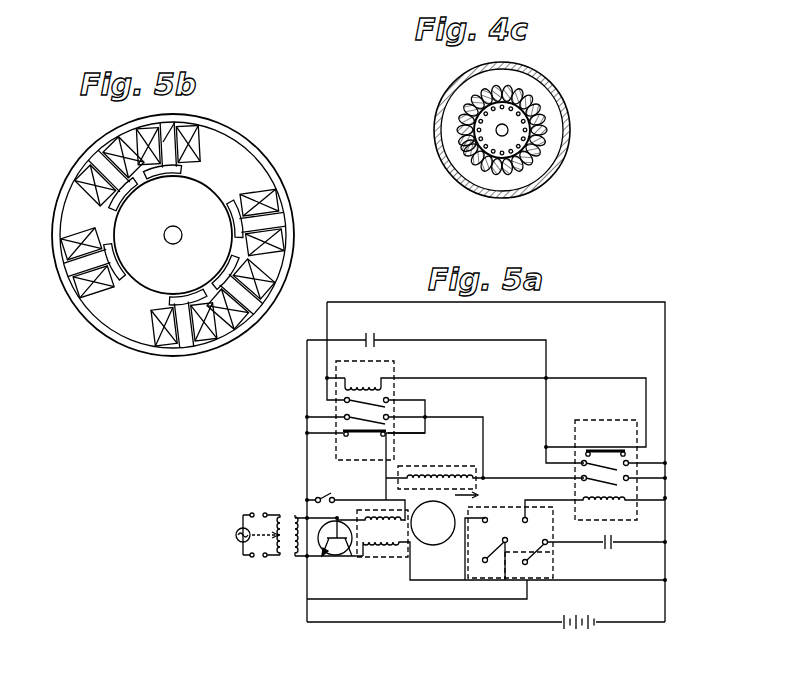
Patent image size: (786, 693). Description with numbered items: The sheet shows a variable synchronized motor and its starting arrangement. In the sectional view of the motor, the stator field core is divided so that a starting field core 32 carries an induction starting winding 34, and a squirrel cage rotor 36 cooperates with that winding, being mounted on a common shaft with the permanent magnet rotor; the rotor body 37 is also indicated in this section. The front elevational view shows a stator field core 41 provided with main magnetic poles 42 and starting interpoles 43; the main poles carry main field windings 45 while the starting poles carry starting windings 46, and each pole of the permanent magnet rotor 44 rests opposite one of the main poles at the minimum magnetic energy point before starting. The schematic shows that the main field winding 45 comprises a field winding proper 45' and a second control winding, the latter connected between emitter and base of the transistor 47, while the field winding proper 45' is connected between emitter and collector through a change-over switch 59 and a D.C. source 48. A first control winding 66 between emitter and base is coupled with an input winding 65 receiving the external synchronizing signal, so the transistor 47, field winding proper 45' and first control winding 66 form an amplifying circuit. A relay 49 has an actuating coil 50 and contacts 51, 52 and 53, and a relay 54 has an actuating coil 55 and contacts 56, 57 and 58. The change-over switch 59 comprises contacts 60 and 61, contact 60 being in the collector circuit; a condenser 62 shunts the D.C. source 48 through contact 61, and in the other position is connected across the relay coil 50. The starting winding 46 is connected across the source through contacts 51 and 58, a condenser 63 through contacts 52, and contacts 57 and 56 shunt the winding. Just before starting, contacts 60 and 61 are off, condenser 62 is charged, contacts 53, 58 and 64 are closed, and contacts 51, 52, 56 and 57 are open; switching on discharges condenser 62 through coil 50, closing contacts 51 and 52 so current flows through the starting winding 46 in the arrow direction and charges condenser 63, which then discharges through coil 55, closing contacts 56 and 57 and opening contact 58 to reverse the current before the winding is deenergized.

In FIG. 4C, the starting field core 32 is at (528, 82).
In FIG. 4C, the induction starting winding 34 is at (537, 108).
In FIG. 4C, the squirrel cage rotor 36 is at (470, 150).
In FIG. 4C, the rotor 37 is at (478, 138).
In FIG. 5B, the stator field core 41 is at (262, 160).
In FIG. 5B, the main magnetic poles 42 is at (175, 122).
In FIG. 5B, the starting interpoles 43 is at (255, 298).
In FIG. 5B, the permanent magnet rotor 44 is at (152, 283).
In FIG. 5A, the permanent magnet rotor 44 is at (446, 538).
In FIG. 5B, the main field winding 45 is at (80, 268).
In FIG. 5A, the main field winding 45 is at (393, 546).
In FIG. 5A, the field winding proper 45' is at (510, 555).
In FIG. 5B, the starting winding 46 is at (232, 307).
In FIG. 5A, the starting winding 46 is at (428, 470).
In FIG. 5A, the transistor 47 is at (340, 557).
In FIG. 5A, the D.C. source 48 is at (562, 628).
In FIG. 5A, the relay 49 is at (580, 420).
In FIG. 5A, the actuating coil 50 is at (618, 502).
In FIG. 5A, the relay contact 51 is at (620, 486).
In FIG. 5A, the relay contact 52 is at (618, 467).
In FIG. 5A, the relay contact 53 is at (606, 451).
In FIG. 5A, the relay 54 is at (395, 370).
In FIG. 5A, the actuating coil 55 is at (390, 385).
In FIG. 5A, the relay contact 56 is at (317, 396).
In FIG. 5A, the relay contact 57 is at (303, 414).
In FIG. 5A, the relay contact 58 is at (363, 434).
In FIG. 5A, the change-over switch 59 is at (556, 568).
In FIG. 5A, the change-over contact 60 is at (490, 546).
In FIG. 5A, the change-over contact 61 is at (548, 543).
In FIG. 5A, the condenser 62 is at (613, 547).
In FIG. 5A, the condenser 63 is at (376, 342).
In FIG. 5A, the contact 64 is at (322, 498).
In FIG. 5A, the input winding 65 is at (274, 550).
In FIG. 5A, the first control winding 66 is at (293, 558).